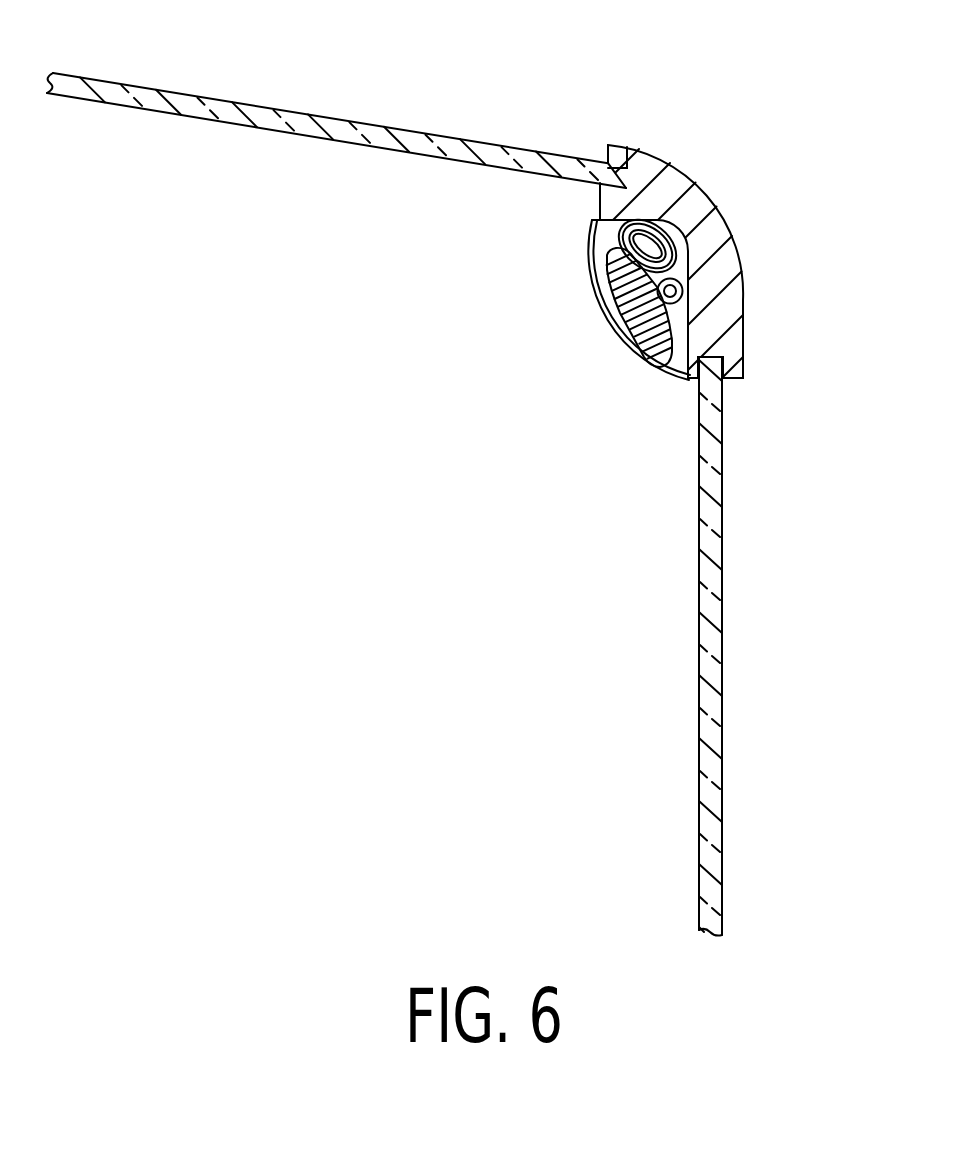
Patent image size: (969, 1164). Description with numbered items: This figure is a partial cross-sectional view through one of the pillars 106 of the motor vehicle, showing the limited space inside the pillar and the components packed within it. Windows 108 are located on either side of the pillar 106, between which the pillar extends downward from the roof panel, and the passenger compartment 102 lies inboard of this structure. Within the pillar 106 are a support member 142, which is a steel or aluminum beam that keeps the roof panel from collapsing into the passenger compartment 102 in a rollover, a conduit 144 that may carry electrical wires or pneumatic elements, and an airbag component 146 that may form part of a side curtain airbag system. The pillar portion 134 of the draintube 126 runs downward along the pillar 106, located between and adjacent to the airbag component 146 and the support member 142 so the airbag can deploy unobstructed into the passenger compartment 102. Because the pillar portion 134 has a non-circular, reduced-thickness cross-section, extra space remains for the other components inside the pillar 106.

The passenger compartment 102 is at (323, 443).
The pillar 106 is at (733, 253).
The window 108 is at (360, 123).
The draintube 126 is at (698, 203).
The pillar portion 134 is at (613, 235).
The support member 142 is at (732, 337).
The conduit 144 is at (683, 292).
The airbag component 146 is at (613, 328).